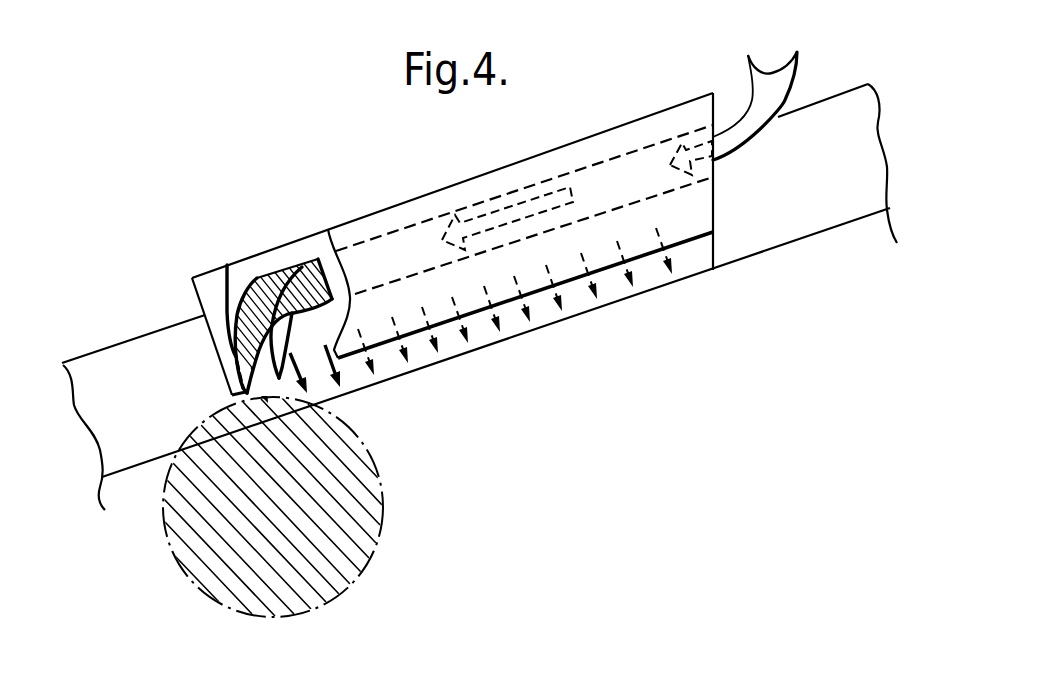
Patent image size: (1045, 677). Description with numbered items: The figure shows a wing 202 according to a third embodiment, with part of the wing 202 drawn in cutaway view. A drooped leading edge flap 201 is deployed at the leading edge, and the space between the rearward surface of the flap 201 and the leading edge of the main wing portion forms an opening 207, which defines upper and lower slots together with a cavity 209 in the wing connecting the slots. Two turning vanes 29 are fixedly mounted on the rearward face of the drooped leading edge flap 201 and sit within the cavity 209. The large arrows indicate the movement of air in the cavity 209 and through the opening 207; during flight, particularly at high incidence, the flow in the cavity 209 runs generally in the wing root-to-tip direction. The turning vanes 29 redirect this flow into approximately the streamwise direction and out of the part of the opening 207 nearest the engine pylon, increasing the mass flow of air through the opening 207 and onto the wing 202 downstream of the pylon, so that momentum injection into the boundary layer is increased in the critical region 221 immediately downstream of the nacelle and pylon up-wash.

The turning vanes 29 is at (279, 265).
The drooped leading edge flap 201 is at (340, 238).
The wing 202 is at (137, 510).
The opening 207 is at (683, 215).
The cavity 209 is at (590, 183).
The critical region 221 is at (383, 498).